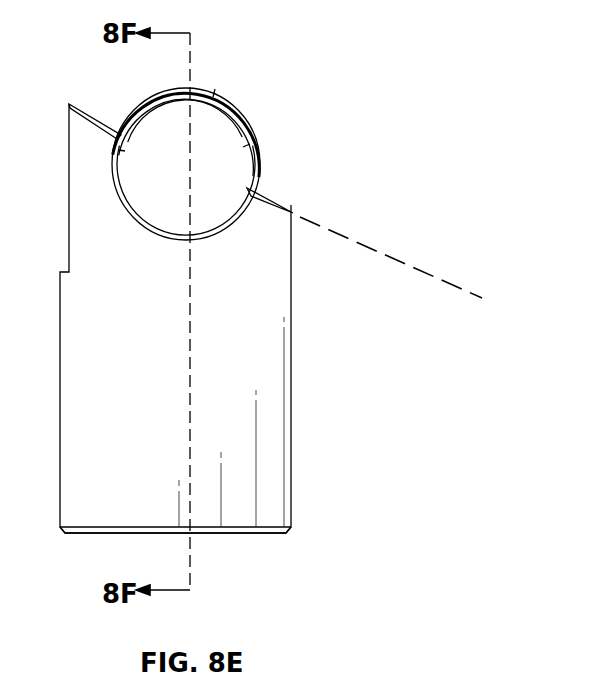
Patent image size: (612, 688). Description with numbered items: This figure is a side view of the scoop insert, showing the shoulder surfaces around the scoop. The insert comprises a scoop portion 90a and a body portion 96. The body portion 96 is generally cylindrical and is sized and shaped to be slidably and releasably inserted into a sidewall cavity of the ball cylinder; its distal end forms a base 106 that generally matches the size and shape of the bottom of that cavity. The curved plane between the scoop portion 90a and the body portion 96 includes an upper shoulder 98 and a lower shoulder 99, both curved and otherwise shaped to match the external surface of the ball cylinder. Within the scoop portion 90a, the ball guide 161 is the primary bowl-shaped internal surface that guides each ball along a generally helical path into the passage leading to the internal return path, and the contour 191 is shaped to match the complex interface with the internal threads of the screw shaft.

The body portion 96 is at (337, 338).
The upper shoulder 98 is at (95, 117).
The lower shoulder 99 is at (271, 195).
The ball guide 161 is at (227, 98).
The contour 191 is at (202, 150).
The scoop portion 90a is at (378, 220).
The base 106 is at (88, 535).